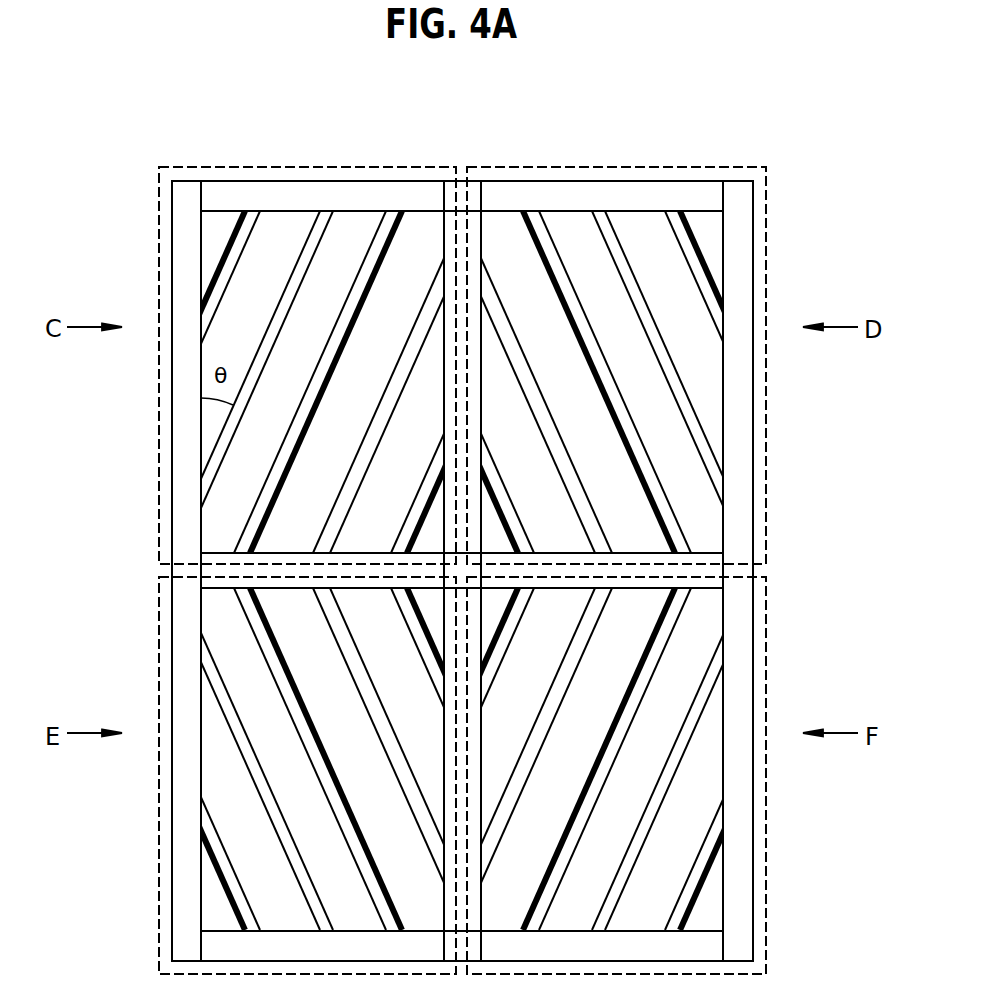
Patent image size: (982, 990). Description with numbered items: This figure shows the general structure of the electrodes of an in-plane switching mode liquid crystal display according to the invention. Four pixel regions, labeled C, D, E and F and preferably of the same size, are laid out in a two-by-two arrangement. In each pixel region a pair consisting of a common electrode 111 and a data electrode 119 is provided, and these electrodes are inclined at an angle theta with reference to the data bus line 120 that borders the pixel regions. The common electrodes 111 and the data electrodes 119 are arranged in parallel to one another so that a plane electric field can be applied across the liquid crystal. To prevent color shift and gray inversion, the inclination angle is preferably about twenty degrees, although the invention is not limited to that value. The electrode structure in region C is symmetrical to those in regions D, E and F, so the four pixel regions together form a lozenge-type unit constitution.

The common electrode 111 is at (283, 464).
The data electrode 119 is at (283, 308).
The data bus line 120 is at (183, 623).